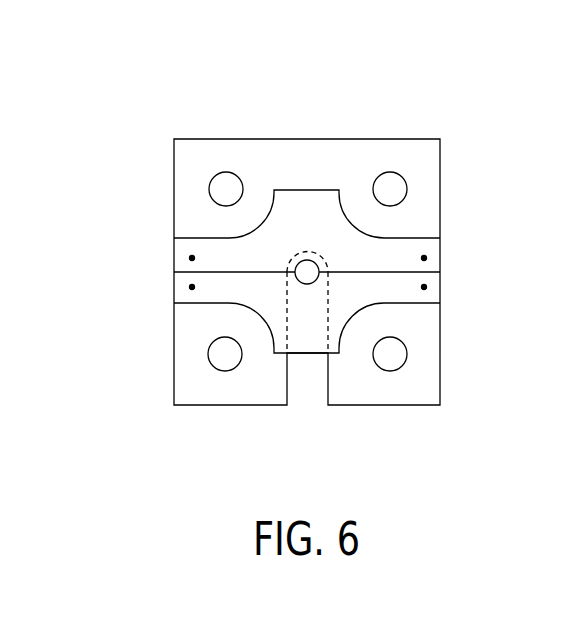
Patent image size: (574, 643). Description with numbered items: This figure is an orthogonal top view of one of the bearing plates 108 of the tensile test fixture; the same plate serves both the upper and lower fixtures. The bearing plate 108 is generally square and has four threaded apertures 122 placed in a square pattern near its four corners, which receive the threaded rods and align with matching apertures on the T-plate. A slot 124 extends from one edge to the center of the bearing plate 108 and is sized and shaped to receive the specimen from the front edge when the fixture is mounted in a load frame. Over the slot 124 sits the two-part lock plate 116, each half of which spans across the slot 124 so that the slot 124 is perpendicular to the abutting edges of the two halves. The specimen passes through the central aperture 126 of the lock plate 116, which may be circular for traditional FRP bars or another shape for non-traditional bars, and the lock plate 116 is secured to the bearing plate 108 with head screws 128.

The bearing plate 108 is at (148, 110).
The lock plate 116 is at (268, 227).
The threaded apertures 122 is at (227, 174).
The slot 124 is at (308, 377).
The central aperture 126 is at (307, 262).
The head screws 128 is at (192, 287).